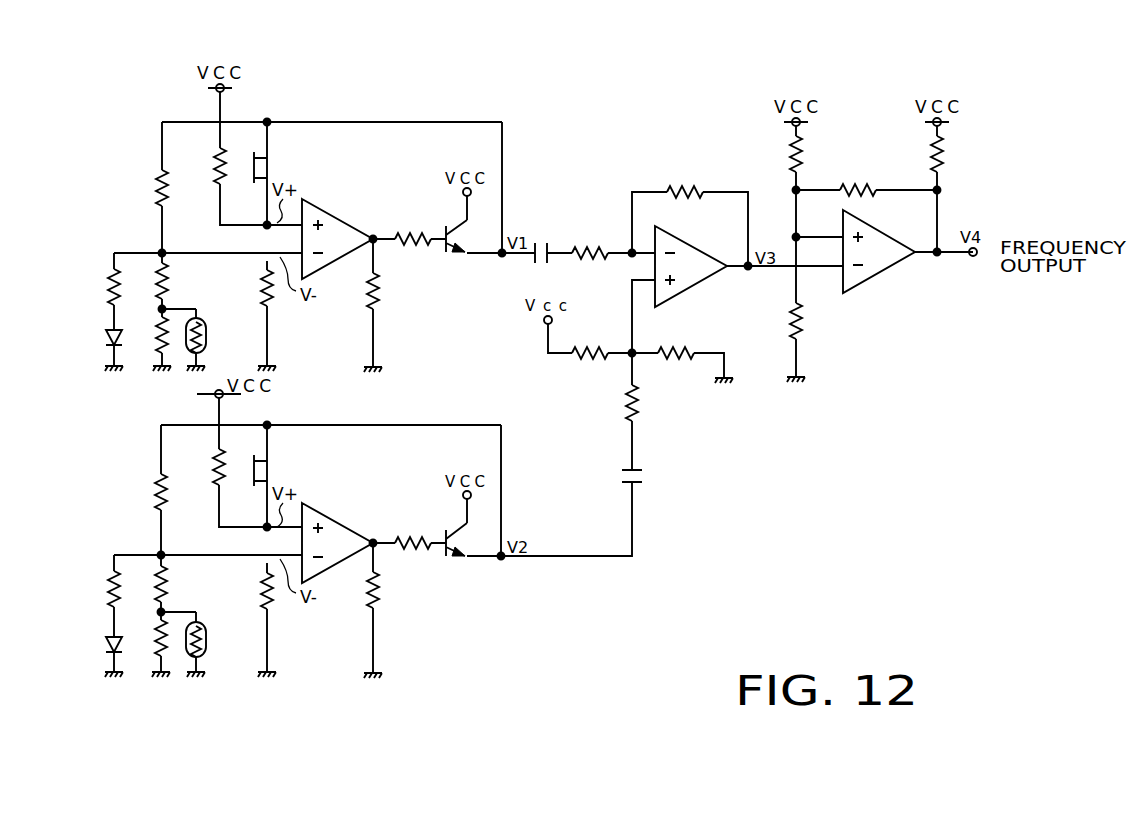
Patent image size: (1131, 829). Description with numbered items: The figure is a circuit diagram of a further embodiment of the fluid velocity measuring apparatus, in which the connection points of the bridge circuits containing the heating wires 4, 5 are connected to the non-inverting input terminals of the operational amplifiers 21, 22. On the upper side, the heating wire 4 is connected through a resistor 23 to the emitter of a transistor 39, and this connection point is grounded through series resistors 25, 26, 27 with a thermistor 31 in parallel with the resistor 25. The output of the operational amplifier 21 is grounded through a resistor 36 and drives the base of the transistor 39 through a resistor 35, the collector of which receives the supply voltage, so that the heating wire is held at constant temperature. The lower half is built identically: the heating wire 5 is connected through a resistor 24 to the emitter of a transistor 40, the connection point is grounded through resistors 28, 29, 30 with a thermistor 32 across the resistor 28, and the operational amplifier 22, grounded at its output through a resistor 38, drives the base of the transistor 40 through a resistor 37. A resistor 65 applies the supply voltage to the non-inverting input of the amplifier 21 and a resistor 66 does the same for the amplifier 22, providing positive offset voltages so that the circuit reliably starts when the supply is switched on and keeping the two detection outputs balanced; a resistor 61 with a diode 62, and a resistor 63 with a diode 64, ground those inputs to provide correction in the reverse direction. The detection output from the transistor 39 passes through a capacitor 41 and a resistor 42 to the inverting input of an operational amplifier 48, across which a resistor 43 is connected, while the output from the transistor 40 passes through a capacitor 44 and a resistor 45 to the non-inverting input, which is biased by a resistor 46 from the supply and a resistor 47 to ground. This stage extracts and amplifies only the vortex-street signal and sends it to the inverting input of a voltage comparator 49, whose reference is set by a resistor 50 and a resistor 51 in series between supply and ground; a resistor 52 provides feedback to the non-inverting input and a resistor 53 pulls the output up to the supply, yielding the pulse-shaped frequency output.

The heating wire 4 is at (265, 168).
The heating wire 5 is at (267, 471).
The operational amplifier 21 is at (329, 216).
The operational amplifier 22 is at (329, 518).
The resistor 23 is at (272, 291).
The resistor 24 is at (272, 590).
The resistor 25 is at (151, 326).
The resistor 26 is at (169, 281).
The resistor 27 is at (114, 183).
The resistor 28 is at (151, 636).
The resistor 29 is at (169, 578).
The resistor 30 is at (152, 493).
The thermistor 31 is at (206, 343).
The thermistor 32 is at (206, 647).
The resistor 35 is at (422, 233).
The resistor 36 is at (385, 284).
The resistor 37 is at (423, 538).
The resistor 38 is at (385, 585).
The transistor 39 is at (452, 252).
The transistor 40 is at (452, 559).
The capacitor 41 is at (538, 240).
The resistor 42 is at (590, 242).
The resistor 43 is at (692, 189).
The capacitor 44 is at (623, 476).
The resistor 45 is at (626, 410).
The resistor 46 is at (597, 347).
The resistor 47 is at (689, 363).
The operational amplifier 48 is at (684, 286).
The voltage comparator 49 is at (874, 274).
The resistor 50 is at (789, 162).
The resistor 51 is at (805, 320).
The resistor 52 is at (864, 184).
The resistor 53 is at (946, 154).
The resistor 61 is at (106, 300).
The diode 62 is at (106, 344).
The resistor 63 is at (106, 592).
The diode 64 is at (106, 647).
The resistor 65 is at (213, 168).
The resistor 66 is at (213, 471).